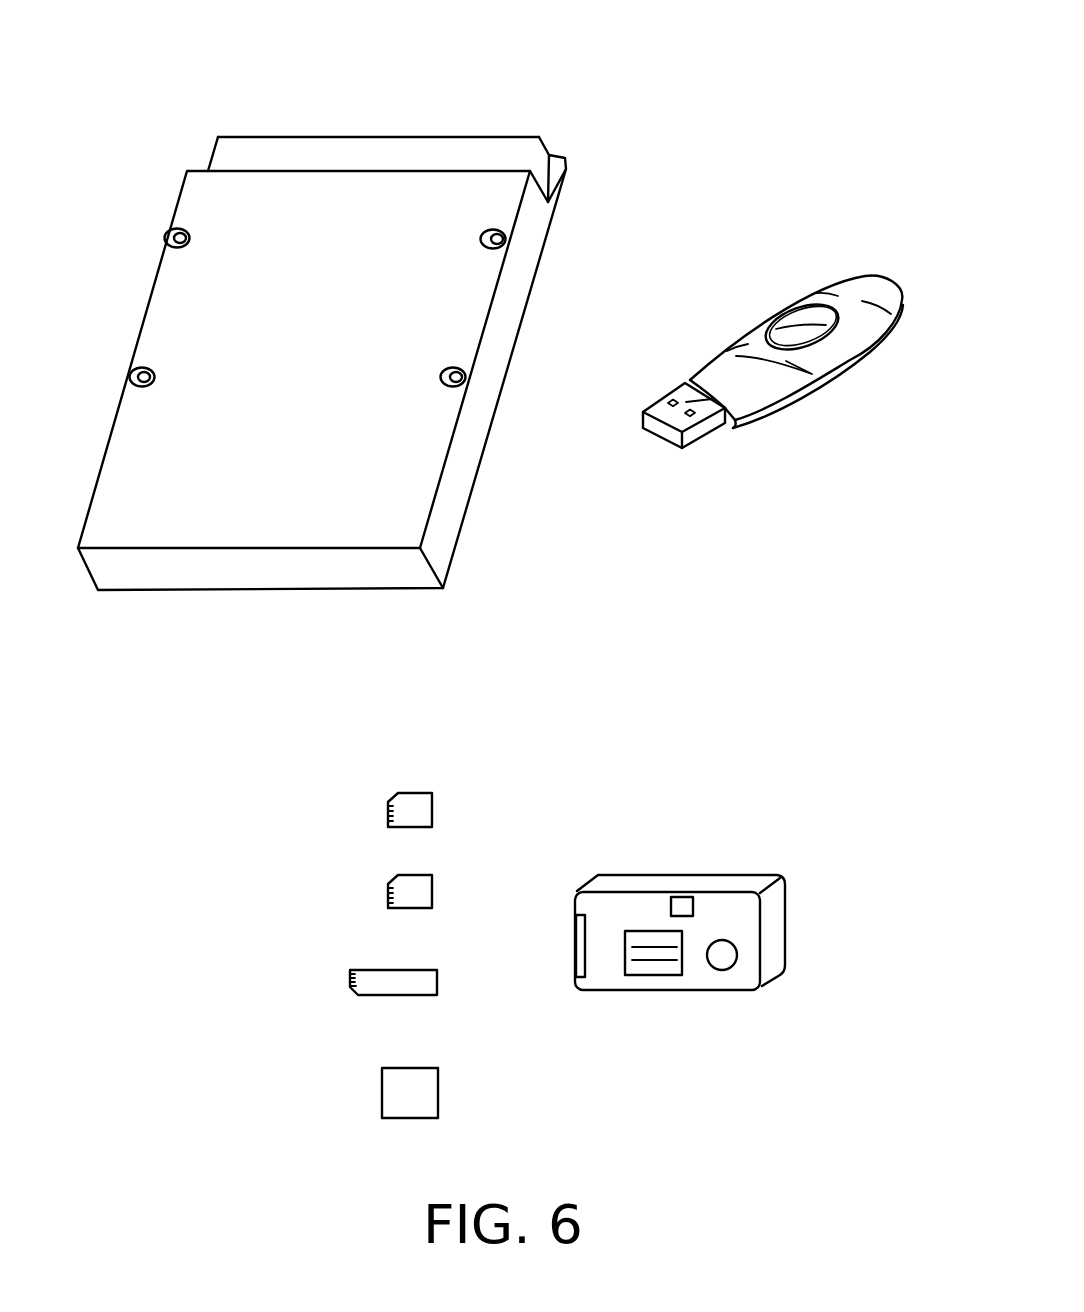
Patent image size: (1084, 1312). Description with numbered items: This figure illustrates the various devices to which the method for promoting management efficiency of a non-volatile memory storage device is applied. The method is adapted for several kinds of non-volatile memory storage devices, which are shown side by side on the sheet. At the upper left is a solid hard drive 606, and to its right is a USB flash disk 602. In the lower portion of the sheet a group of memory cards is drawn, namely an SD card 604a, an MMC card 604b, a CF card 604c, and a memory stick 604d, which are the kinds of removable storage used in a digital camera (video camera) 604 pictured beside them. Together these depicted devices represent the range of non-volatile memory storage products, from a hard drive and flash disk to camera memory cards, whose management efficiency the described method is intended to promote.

The solid hard drive 606 is at (517, 118).
The USB flash disk 602 is at (760, 330).
The digital camera 604 is at (785, 918).
The SD card 604a is at (432, 800).
The MMC card 604b is at (432, 881).
The CF card 604c is at (438, 1090).
The memory stick 604d is at (437, 980).